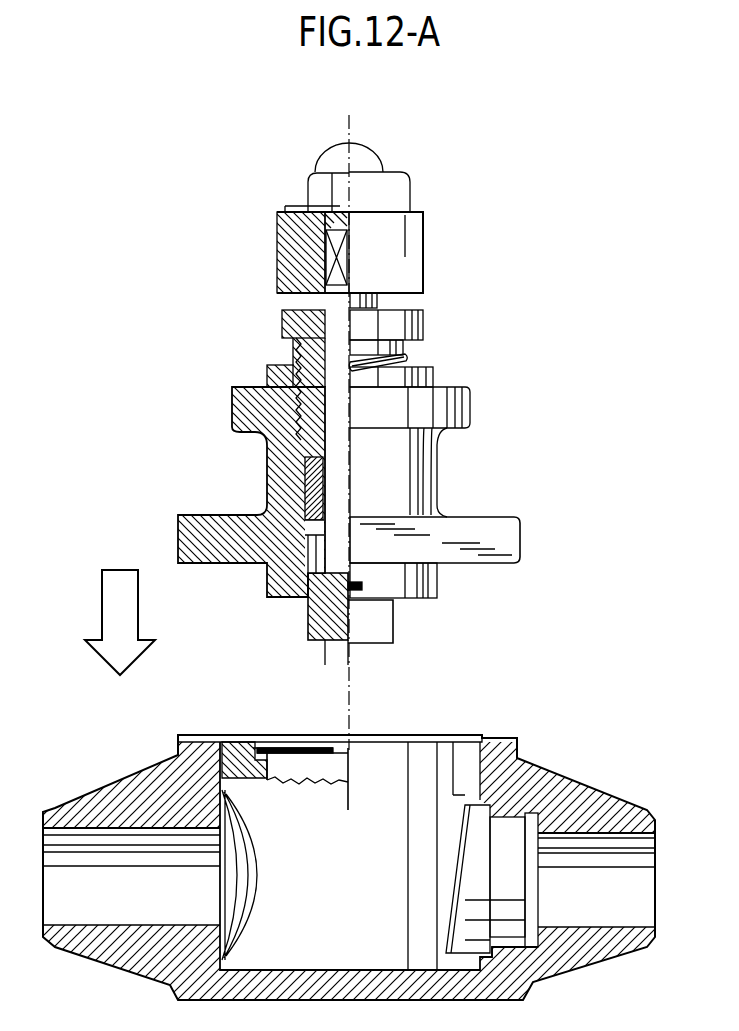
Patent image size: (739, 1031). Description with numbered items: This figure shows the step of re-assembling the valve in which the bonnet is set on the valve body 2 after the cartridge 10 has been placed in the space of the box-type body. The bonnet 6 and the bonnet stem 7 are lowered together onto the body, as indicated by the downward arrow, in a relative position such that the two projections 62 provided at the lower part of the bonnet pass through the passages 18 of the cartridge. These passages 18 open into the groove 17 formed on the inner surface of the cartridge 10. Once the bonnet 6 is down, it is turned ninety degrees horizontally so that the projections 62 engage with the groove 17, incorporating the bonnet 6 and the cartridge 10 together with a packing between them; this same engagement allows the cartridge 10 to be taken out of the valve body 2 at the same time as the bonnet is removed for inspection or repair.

The valve body 2 is at (349, 839).
The bonnet 6 is at (502, 541).
The bonnet stem 7 is at (337, 452).
The cartridge 10 is at (362, 885).
The groove 17 is at (282, 752).
The passages 18 is at (340, 750).
The projections 62 is at (367, 587).